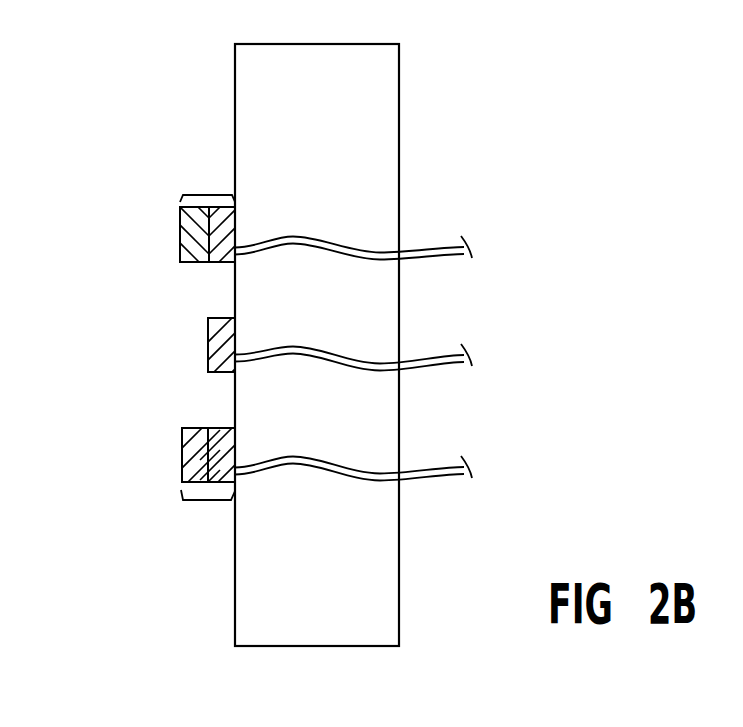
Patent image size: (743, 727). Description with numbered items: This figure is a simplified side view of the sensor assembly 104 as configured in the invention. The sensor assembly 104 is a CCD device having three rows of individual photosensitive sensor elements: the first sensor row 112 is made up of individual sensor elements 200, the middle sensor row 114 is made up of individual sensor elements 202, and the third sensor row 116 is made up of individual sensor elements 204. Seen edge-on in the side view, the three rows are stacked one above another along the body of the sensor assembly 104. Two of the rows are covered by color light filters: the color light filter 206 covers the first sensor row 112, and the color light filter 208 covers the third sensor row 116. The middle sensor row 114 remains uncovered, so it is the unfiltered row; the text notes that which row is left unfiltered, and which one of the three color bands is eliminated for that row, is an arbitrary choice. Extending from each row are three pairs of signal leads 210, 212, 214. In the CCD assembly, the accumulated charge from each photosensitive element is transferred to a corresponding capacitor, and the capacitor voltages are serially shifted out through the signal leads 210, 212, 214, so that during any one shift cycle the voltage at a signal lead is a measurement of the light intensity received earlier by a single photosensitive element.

The sensor assembly 104 is at (347, 616).
The sensor row 112 is at (242, 238).
The sensor row 114 is at (242, 348).
The sensor row 116 is at (242, 445).
The sensor element 200 is at (208, 195).
The sensor element 202 is at (207, 333).
The sensor element 204 is at (207, 500).
The color light filter 206 is at (179, 233).
The color light filter 208 is at (181, 440).
The signal leads 210 is at (438, 251).
The signal leads 212 is at (438, 361).
The signal leads 214 is at (432, 470).